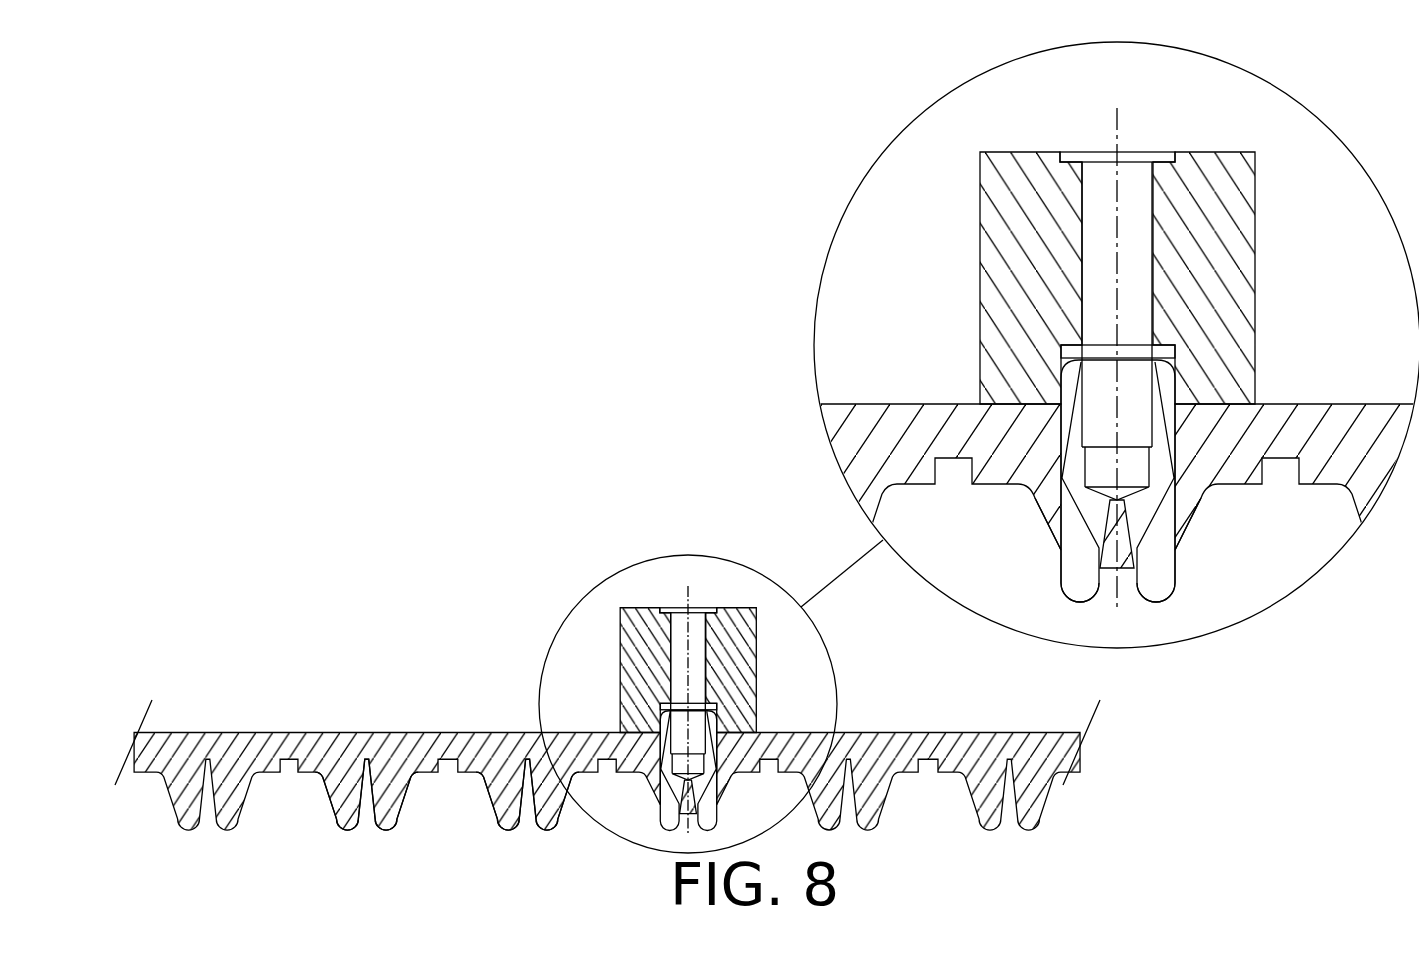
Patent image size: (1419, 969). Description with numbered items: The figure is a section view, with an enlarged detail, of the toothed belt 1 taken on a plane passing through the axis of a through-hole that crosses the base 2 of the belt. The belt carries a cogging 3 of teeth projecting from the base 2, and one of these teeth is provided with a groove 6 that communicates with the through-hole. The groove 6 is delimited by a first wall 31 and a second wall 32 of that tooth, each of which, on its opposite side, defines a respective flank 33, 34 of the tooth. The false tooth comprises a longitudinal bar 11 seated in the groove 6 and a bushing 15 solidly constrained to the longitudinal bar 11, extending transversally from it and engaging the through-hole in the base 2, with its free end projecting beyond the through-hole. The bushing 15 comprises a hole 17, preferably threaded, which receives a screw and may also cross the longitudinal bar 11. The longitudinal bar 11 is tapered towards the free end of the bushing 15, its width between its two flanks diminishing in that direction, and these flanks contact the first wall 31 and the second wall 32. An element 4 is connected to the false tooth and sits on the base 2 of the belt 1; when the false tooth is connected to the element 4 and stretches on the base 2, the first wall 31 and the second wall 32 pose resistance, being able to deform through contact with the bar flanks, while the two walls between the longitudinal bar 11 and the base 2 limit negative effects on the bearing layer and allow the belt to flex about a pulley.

The toothed belt 1 is at (647, 700).
The base 2 is at (862, 415).
The cogging 3 is at (348, 792).
The element 4 is at (988, 203).
The groove 6 is at (537, 790).
The longitudinal bar 11 is at (1118, 548).
The bushing 15 is at (1066, 430).
The hole 17 is at (1141, 478).
The first wall 31 is at (1186, 548).
The second wall 32 is at (1052, 543).
The flank 33 is at (1195, 522).
The flank 34 is at (1060, 503).